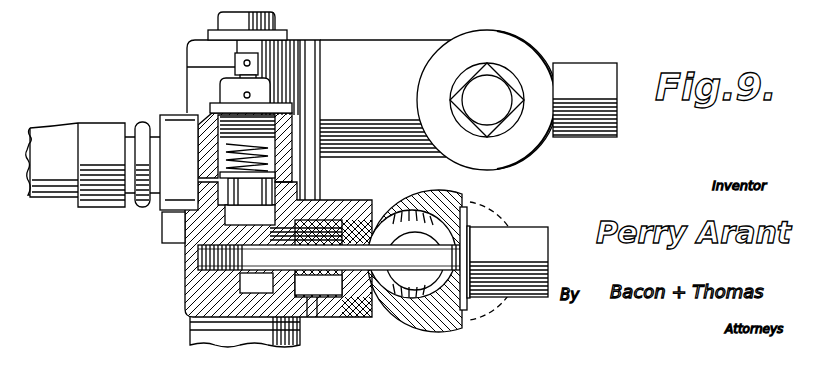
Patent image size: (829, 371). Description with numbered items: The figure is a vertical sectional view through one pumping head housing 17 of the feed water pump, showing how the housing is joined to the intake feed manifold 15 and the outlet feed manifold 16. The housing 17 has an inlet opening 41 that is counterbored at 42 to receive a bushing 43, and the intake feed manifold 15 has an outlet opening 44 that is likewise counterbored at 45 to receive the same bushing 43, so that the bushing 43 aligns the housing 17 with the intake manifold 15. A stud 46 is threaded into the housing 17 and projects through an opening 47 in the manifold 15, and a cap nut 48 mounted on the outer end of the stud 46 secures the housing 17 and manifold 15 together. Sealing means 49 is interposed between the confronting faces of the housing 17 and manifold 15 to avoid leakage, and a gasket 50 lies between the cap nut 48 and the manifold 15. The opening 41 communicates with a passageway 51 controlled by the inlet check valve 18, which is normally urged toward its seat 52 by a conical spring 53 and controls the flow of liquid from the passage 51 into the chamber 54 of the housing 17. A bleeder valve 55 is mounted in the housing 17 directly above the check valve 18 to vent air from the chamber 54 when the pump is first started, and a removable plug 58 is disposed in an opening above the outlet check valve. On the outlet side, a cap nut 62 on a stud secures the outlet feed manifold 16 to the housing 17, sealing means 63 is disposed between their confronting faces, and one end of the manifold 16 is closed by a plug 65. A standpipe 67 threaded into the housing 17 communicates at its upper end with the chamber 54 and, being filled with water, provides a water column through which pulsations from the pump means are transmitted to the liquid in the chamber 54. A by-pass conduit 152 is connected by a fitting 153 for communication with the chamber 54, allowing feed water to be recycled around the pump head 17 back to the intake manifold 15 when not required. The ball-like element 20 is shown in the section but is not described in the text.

The intake feed manifold 15 is at (428, 190).
The outlet feed manifold 16 is at (395, 40).
The pumping head housing 17 is at (185, 308).
The inlet check valve 18 is at (275, 174).
The ball bore 20 is at (423, 293).
The inlet opening 41 is at (292, 283).
The counterbore 42 is at (307, 318).
The bushing 43 is at (342, 295).
The outlet opening 44 is at (368, 233).
The counterbore 45 is at (353, 233).
The stud 46 is at (185, 268).
The opening 47 is at (463, 215).
The cap nut 48 is at (520, 228).
The sealing means 49 is at (317, 297).
The gasket 50 is at (469, 312).
The passageway 51 is at (185, 232).
The seat 52 is at (250, 201).
The conical spring 53 is at (272, 152).
The chamber 54 is at (198, 125).
The bleeder valve 55 is at (297, 110).
The removable plug 58 is at (220, 20).
The cap nut 62 is at (578, 63).
The sealing means 63 is at (316, 42).
The plug 65 is at (505, 70).
The standpipe 67 is at (193, 342).
The by-pass conduit 152 is at (28, 135).
The fitting 153 is at (142, 122).